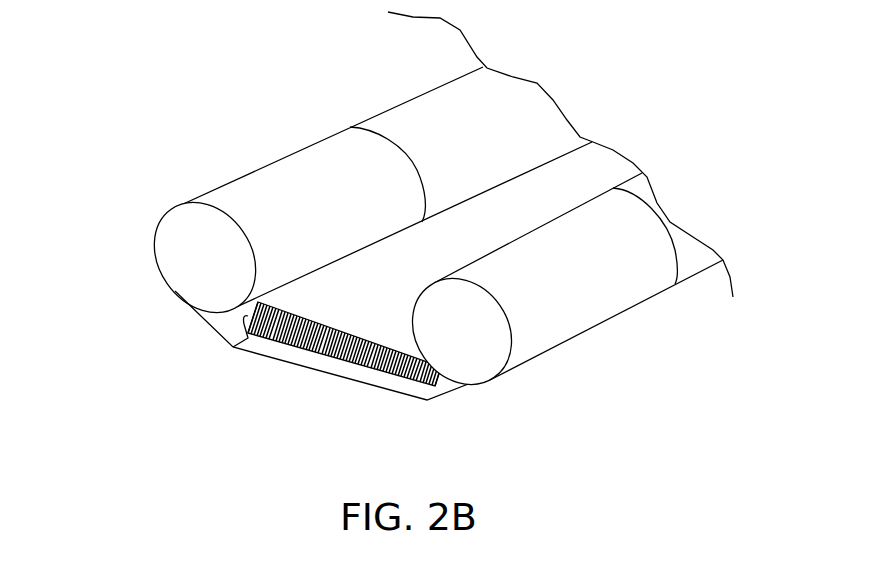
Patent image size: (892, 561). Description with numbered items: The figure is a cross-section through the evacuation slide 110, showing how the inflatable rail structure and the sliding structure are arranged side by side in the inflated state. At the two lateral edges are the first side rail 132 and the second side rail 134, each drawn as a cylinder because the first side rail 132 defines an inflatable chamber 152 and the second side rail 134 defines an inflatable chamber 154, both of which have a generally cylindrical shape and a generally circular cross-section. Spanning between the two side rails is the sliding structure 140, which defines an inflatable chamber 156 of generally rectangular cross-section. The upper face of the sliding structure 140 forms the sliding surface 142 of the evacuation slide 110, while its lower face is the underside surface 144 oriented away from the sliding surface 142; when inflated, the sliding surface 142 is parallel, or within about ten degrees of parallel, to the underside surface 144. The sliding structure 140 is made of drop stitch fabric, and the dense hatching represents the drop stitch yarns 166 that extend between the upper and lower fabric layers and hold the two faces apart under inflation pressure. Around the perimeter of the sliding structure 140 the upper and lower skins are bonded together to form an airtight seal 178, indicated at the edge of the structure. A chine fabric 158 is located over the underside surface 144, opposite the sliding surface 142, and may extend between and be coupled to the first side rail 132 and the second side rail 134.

The evacuation slide 110 is at (147, 100).
The first side rail 132 is at (600, 308).
The second side rail 134 is at (258, 184).
The sliding structure 140 is at (600, 168).
The sliding surface 142 is at (440, 271).
The underside surface 144 is at (373, 371).
The inflatable chamber 152 is at (476, 360).
The inflatable chamber 154 is at (172, 259).
The inflatable chamber 156 is at (267, 285).
The chine fabric 158 is at (212, 321).
The drop stitch yarns 166 is at (351, 346).
The airtight seal 178 is at (238, 325).